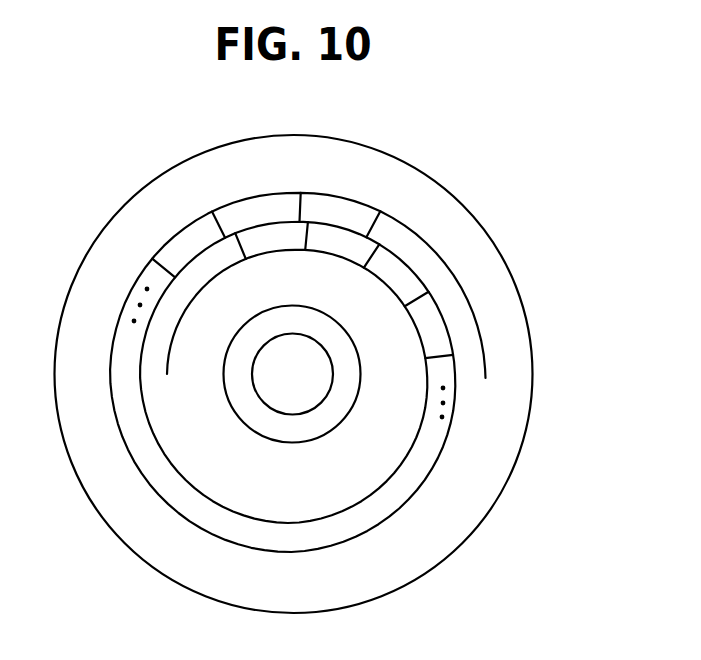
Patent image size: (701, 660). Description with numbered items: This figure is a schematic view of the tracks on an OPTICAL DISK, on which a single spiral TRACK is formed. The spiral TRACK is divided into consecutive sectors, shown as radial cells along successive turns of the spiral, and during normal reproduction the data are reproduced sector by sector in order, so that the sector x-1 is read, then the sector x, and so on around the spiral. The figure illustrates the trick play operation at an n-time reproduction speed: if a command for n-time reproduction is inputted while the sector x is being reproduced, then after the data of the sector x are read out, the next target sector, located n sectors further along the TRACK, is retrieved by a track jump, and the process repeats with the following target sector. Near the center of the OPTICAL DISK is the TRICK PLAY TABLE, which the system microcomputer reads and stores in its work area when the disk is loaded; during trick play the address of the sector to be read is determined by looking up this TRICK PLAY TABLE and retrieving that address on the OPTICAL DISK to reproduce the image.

The optical disk OPTICAL DISK is at (441, 188).
The spiral track TRACK is at (290, 517).
The trick play table TRICK PLAY TABLE is at (258, 410).
The sector x-1 is at (275, 238).
The sector x is at (358, 248).